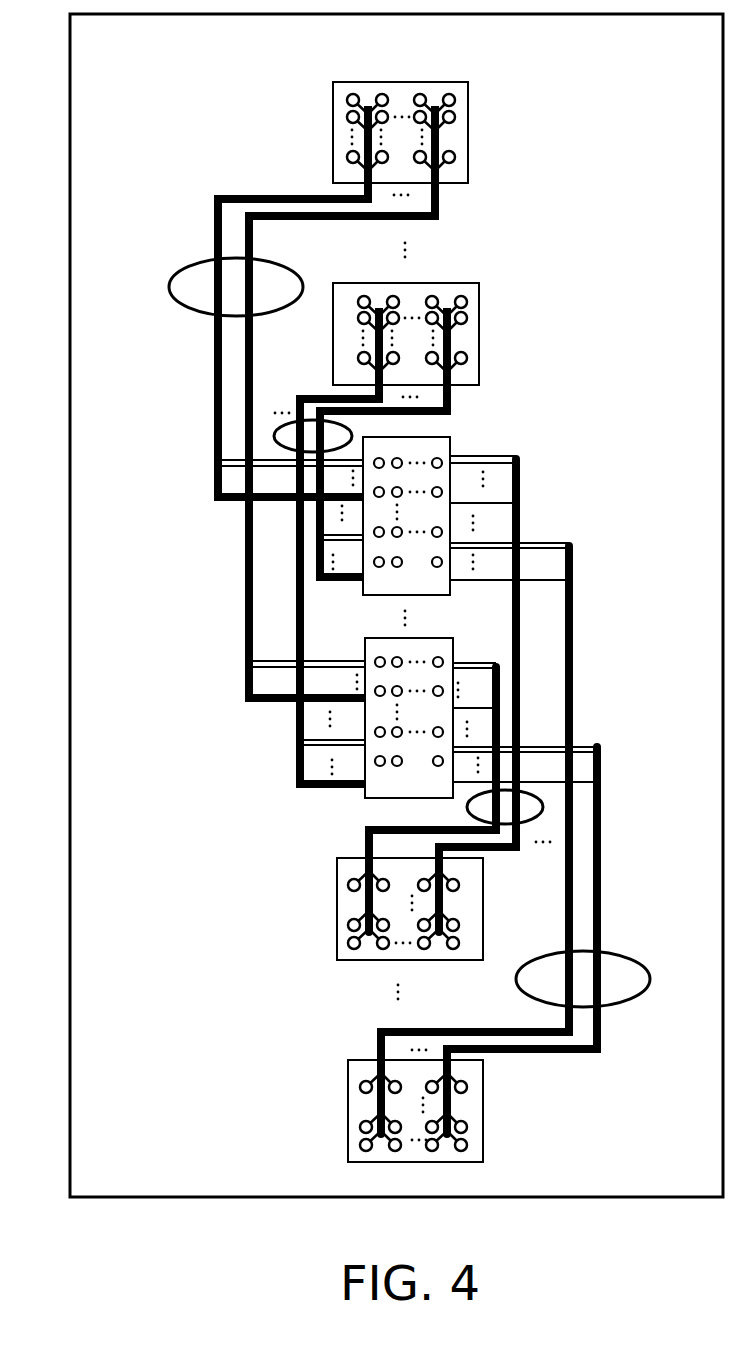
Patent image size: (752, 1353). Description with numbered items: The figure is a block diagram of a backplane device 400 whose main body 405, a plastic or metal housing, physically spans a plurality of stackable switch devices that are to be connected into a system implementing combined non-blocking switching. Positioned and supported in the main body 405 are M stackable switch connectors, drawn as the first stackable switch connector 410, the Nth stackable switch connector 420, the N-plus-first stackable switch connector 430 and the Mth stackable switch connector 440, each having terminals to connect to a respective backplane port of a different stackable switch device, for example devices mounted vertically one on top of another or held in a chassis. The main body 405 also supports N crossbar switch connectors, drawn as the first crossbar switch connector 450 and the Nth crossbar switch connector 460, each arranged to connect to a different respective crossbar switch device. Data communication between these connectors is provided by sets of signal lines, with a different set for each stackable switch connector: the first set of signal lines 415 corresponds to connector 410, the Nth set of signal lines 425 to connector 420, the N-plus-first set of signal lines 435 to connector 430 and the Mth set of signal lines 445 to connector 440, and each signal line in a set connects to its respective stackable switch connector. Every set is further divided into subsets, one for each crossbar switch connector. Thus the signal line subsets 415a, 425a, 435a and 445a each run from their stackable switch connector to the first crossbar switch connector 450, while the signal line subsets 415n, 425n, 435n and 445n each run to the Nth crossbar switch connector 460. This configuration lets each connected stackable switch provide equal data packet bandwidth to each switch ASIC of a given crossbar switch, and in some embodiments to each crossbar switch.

The backplane device 400 is at (116, 81).
The main body 405 is at (96, 565).
The stackable switch connector SS1 410 is at (571, 81).
The set of signal lines G1 415 is at (151, 285).
The subset of signal lines SG1,1 415a is at (198, 193).
The subset of signal lines SG1,N 415n is at (457, 212).
The stackable switch connector SSN 420 is at (583, 283).
The set of signal lines GN 425 is at (253, 433).
The subset of signal lines SGN,1 425a is at (471, 400).
The subset of signal lines SGN,N 425n is at (278, 753).
The stackable switch connector SSN+1 430 is at (333, 978).
The set of signal lines GN+1 435 is at (555, 823).
The subset of signal lines SGN+1,1 435a is at (542, 668).
The subset of signal lines SGN+1,N 435n is at (346, 838).
The stackable switch connector SSM 440 is at (325, 1163).
The set of signal lines GM 445 is at (710, 1073).
The subset of signal lines SGM,1 445a is at (359, 1035).
The subset of signal lines SGM,N 445n is at (624, 753).
The crossbar switch connector CBS1 450 is at (450, 437).
The crossbar switch connector CBSN 460 is at (365, 798).